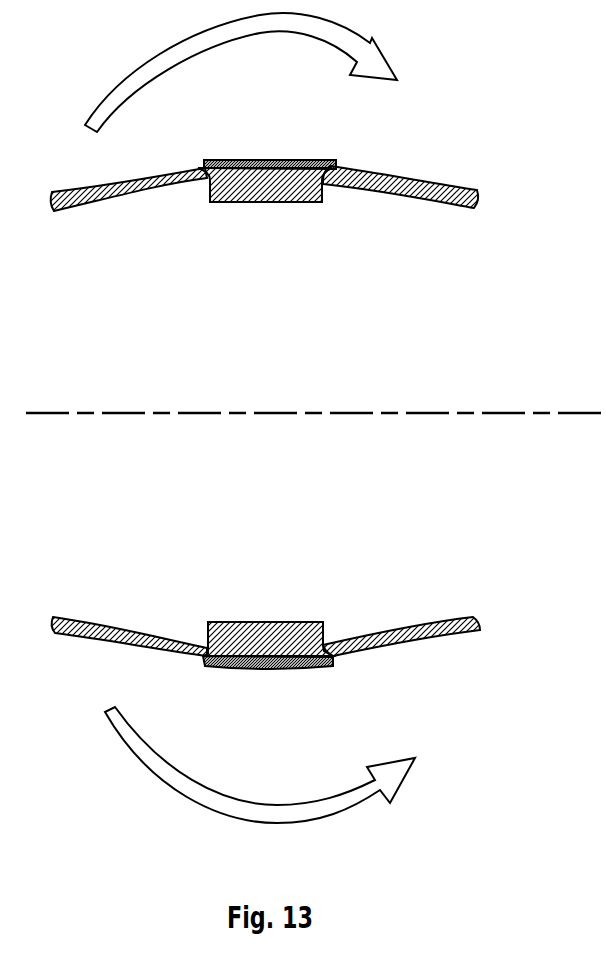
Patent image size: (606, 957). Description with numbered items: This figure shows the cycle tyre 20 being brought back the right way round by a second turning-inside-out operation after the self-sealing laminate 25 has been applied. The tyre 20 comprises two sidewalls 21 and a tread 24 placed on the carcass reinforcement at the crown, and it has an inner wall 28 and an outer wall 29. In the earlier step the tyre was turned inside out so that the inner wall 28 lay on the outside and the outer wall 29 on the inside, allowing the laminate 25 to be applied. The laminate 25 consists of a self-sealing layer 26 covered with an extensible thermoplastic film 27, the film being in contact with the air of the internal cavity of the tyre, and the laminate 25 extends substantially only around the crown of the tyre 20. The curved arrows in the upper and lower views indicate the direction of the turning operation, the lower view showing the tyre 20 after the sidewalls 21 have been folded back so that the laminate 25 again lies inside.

The tyre 20 is at (605, 331).
The sidewalls 21 is at (130, 190).
The tread 24 is at (278, 180).
The self-sealing laminate 25 is at (313, 143).
The self-sealing layer 26 is at (316, 162).
The extensible thermoplastic film 27 is at (258, 157).
The inner wall 28 is at (190, 170).
The outer wall 29 is at (297, 200).